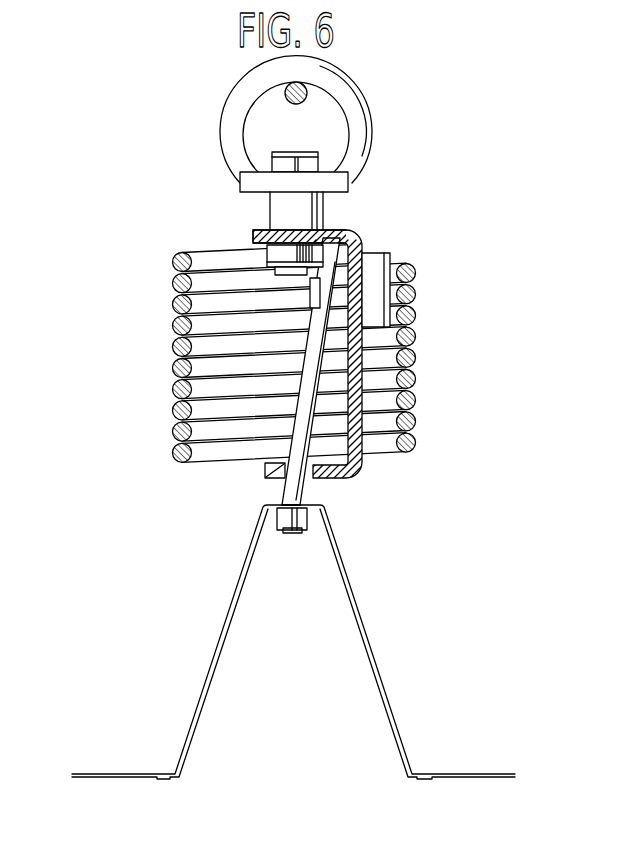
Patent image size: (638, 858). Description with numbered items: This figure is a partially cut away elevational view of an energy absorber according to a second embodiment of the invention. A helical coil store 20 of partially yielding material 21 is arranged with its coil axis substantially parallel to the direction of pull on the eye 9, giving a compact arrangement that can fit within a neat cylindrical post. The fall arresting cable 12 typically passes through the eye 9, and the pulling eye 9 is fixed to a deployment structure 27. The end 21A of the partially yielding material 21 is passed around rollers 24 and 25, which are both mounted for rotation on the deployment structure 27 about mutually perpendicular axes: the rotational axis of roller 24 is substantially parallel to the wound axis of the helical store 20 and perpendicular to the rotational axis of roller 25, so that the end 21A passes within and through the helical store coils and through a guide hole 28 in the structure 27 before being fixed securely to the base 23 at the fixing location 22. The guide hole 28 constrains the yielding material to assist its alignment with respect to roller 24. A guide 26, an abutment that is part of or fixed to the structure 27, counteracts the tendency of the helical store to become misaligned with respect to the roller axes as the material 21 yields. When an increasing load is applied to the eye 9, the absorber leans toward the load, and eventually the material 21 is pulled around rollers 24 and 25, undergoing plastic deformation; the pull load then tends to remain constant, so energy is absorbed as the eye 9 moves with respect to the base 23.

The eye 9 is at (360, 134).
The fall arresting cable 12 is at (297, 105).
The helical coil store 20 is at (178, 253).
The partially yielding material 21 is at (307, 432).
The end of the partially yielding material 21A is at (285, 492).
The fixing location 22 is at (303, 531).
The base 23 is at (213, 662).
The roller 24 is at (350, 232).
The roller 25 is at (342, 323).
The guide 26 is at (370, 290).
The deployment structure 27 is at (353, 403).
The guide hole 28 is at (273, 460).